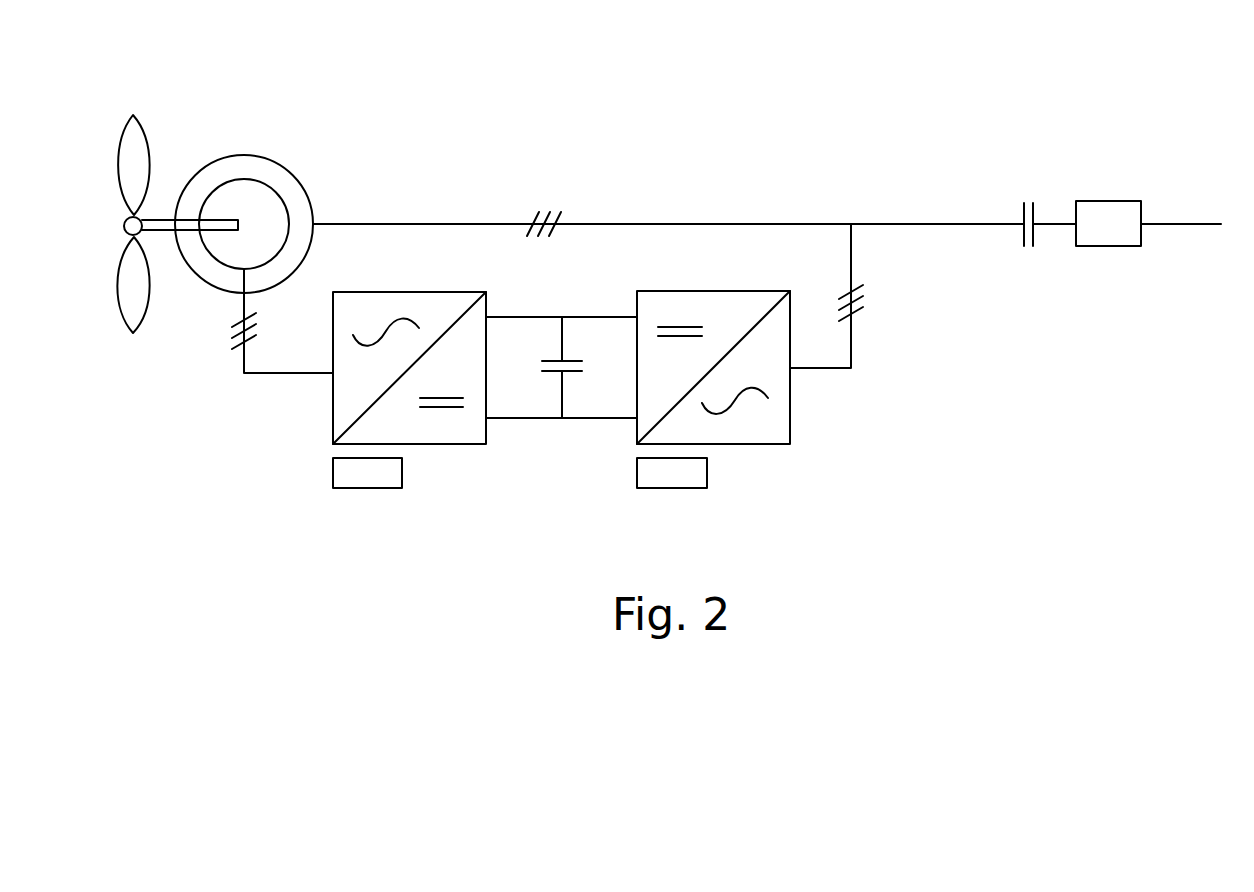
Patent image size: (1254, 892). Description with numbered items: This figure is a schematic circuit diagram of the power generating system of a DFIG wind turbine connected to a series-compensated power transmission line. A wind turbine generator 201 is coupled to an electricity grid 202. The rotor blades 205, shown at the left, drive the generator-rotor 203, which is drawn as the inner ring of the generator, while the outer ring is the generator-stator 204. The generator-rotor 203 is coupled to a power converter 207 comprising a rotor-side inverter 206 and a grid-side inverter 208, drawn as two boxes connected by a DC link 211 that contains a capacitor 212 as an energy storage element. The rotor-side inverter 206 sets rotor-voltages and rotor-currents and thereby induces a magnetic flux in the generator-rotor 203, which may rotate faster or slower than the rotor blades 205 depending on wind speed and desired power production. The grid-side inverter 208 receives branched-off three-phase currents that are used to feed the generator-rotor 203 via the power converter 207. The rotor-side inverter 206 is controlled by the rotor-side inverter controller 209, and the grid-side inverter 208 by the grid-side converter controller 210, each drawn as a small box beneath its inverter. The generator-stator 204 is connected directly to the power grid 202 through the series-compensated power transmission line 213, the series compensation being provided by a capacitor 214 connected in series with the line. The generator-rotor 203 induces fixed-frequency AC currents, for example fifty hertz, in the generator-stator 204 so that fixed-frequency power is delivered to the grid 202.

The wind turbine generator 201 is at (252, 179).
The electricity grid 202 is at (1108, 201).
The generator-rotor 203 is at (284, 201).
The generator-stator 204 is at (281, 165).
The rotor blades 205 is at (133, 115).
The rotor-side inverter 206 is at (330, 403).
The power converter 207 is at (562, 408).
The grid-side inverter 208 is at (790, 380).
The rotor-side inverter controller 209 is at (402, 472).
The grid-side converter controller 210 is at (707, 472).
The DC link 211 is at (552, 317).
The capacitor 212 is at (565, 372).
The series-compensated power transmission line 213 is at (890, 224).
The capacitor 214 is at (1033, 212).